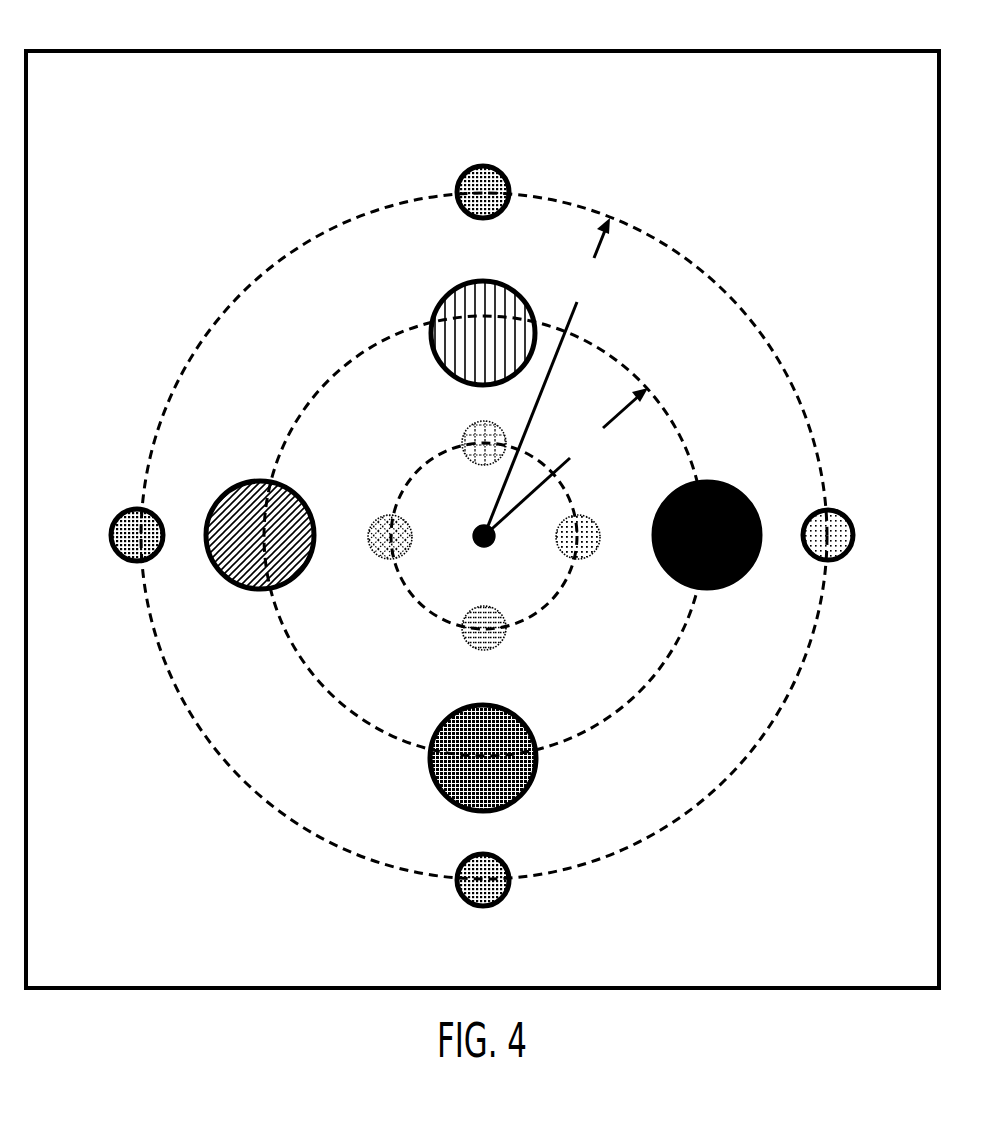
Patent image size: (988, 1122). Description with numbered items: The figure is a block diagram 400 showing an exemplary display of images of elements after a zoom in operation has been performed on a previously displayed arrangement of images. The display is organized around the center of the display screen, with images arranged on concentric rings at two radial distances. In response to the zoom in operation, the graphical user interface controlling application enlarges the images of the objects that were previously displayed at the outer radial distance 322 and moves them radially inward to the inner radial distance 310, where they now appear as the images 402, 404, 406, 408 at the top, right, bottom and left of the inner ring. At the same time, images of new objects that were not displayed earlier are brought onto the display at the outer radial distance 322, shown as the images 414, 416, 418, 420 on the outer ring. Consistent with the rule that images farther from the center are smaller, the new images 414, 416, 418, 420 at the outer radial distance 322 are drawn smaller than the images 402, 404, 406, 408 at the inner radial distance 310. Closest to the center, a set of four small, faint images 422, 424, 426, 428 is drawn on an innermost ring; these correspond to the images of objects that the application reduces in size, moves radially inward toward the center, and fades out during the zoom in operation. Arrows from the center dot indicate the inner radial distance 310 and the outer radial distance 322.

The block diagram 400 is at (78, 51).
The image of object moved to radial distance r1 402 is at (488, 282).
The image of object moved to radial distance r1 404 is at (726, 487).
The image of object moved to radial distance r1 406 is at (488, 706).
The image of object moved to radial distance r1 408 is at (245, 485).
The image of new object 414 is at (490, 167).
The image of new object 416 is at (850, 512).
The image of new object 418 is at (490, 853).
The image of new object 420 is at (126, 512).
The image of element on first circle (top) 422 is at (466, 427).
The image of element on first circle (left) 424 is at (385, 515).
The image of element on first circle (bottom) 426 is at (463, 638).
The image of element on first circle (right) 428 is at (592, 557).
The radial distance r1 310 is at (580, 463).
The radial distance r2 322 is at (603, 283).